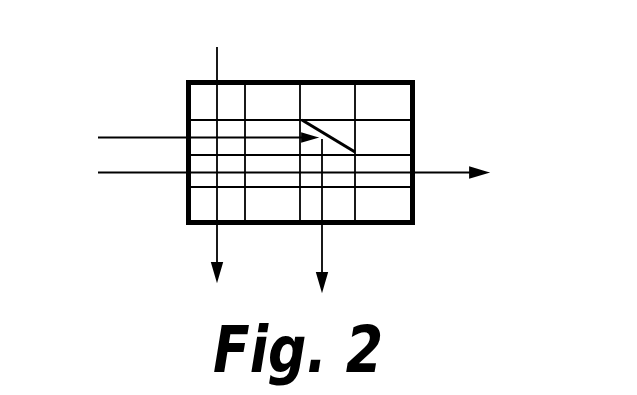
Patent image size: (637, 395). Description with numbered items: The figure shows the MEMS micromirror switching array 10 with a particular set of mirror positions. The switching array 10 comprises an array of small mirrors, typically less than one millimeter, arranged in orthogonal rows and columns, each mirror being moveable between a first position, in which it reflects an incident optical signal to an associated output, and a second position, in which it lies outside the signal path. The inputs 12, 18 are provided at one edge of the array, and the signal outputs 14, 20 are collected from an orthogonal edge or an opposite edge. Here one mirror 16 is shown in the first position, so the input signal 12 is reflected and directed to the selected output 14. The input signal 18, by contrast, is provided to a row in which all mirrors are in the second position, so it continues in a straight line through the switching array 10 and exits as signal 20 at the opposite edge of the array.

The MEMS micromirror switching array 10 is at (414, 98).
The input signal 12 is at (122, 137).
The signal output 14 is at (323, 257).
The mirror 16 is at (331, 130).
The input signal 18 is at (138, 173).
The signal output 20 is at (443, 173).